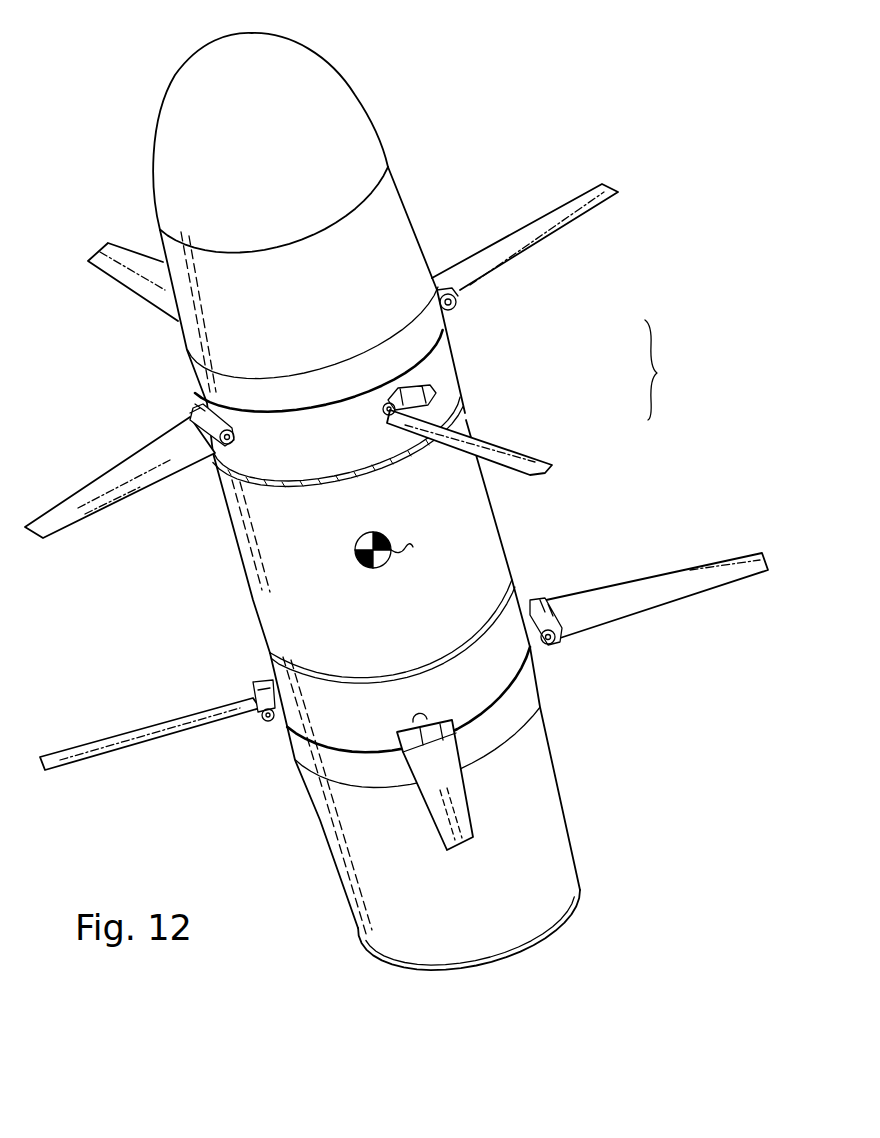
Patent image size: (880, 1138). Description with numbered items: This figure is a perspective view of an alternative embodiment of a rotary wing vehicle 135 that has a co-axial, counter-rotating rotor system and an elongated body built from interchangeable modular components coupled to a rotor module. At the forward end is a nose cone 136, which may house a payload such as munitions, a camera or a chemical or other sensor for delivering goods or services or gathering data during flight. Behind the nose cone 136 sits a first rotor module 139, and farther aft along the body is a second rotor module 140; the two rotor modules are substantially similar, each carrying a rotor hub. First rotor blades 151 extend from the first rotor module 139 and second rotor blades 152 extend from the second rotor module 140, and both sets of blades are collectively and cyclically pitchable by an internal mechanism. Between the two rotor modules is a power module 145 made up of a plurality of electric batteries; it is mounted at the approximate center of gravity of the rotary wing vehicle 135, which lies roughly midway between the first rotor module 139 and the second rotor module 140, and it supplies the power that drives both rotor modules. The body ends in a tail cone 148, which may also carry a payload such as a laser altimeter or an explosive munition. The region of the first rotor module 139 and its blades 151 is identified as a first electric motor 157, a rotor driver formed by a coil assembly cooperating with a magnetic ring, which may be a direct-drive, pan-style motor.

The rotary wing vehicle 135 is at (396, 501).
The nose cone 136 is at (387, 133).
The first rotor module 139 is at (535, 337).
The second rotor module 140 is at (222, 665).
The power module 145 is at (588, 518).
The tail cone 148 is at (563, 803).
The first rotor blades 151 is at (130, 290).
The second rotor blades 152 is at (653, 610).
The first electric motor 157 is at (676, 370).